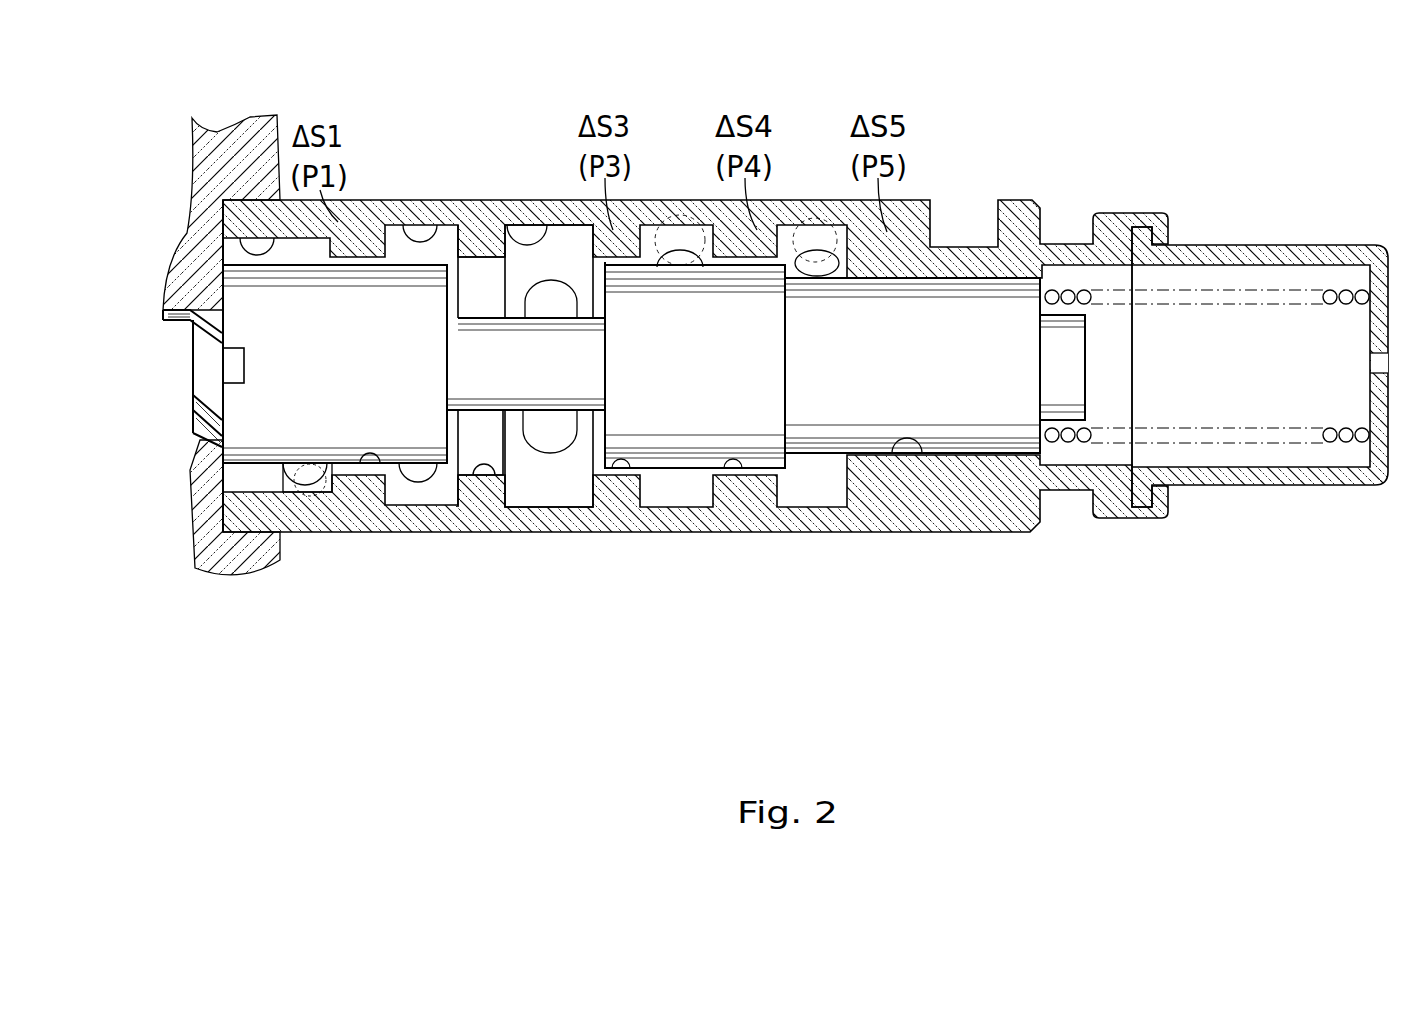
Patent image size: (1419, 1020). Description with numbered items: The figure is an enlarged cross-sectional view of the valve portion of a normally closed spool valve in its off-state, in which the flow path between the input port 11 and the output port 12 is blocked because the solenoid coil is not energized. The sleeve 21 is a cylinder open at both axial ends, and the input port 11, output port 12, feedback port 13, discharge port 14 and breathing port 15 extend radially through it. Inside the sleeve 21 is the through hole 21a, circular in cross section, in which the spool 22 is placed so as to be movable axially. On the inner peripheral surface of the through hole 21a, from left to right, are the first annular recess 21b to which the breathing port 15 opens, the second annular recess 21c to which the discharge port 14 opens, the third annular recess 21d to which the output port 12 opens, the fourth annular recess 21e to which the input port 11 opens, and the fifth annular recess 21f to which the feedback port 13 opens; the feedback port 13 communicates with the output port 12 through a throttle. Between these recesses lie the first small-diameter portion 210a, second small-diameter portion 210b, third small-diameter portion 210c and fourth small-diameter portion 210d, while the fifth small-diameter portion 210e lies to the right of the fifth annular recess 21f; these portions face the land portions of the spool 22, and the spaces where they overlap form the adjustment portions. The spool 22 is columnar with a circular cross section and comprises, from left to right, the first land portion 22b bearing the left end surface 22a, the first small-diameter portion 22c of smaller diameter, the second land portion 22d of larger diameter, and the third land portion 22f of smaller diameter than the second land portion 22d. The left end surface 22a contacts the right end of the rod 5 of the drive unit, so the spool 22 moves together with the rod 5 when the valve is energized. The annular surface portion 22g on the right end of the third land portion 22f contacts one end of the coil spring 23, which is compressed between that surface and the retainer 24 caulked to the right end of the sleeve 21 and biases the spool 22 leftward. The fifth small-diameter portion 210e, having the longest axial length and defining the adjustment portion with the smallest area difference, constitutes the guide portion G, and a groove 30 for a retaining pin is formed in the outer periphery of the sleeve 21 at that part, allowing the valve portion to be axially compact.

The rod 5 is at (170, 353).
The input port 11 is at (693, 245).
The output port 12 is at (573, 268).
The feedback port 13 is at (826, 255).
The discharge port 14 is at (493, 452).
The breathing port 15 is at (373, 452).
The sleeve 21 is at (1010, 205).
The through hole 21a is at (1103, 278).
The first annular recess 21b is at (272, 250).
The second annular recess 21c is at (437, 228).
The third annular recess 21d is at (535, 228).
The fourth annular recess 21e is at (672, 238).
The fifth annular recess 21f is at (802, 240).
The spool 22 is at (612, 378).
The left end surface 22a is at (215, 345).
The first land portion 22b is at (247, 402).
The first small-diameter portion 22c is at (548, 382).
The second land portion 22d is at (670, 410).
The third land portion 22f is at (997, 412).
The annular surface portion 22g is at (1052, 445).
The spring 23 is at (1335, 290).
The retainer 24 is at (1392, 250).
The groove 30 is at (940, 213).
The first small-diameter portion 210a is at (423, 460).
The second small-diameter portion 210b is at (510, 467).
The third small-diameter portion 210c is at (621, 458).
The fourth small-diameter portion 210d is at (733, 458).
The fifth small-diameter portion 210e is at (907, 440).
The guide portion G is at (968, 456).